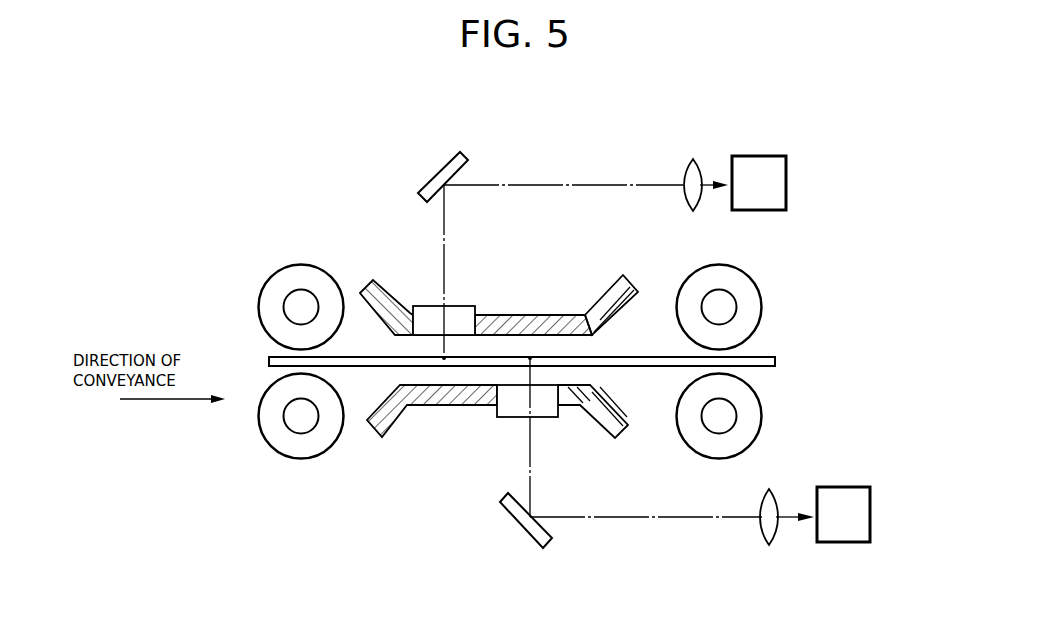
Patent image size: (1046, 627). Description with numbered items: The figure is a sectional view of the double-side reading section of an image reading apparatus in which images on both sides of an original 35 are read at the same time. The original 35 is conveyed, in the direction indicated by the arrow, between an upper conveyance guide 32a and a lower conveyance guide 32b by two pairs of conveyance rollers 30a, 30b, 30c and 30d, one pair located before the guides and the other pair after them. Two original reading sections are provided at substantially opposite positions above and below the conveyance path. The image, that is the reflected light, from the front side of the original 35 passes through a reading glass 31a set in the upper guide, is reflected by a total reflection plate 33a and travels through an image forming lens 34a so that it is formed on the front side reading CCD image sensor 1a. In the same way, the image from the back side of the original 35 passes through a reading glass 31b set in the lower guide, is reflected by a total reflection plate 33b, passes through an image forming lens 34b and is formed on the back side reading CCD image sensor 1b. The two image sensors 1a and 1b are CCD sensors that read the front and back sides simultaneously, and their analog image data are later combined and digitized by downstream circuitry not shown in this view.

The front side reading CCD image sensor 1a is at (787, 183).
The back side reading CCD image sensor 1b is at (863, 487).
The conveyance roller 30a is at (323, 265).
The conveyance roller 30b is at (313, 458).
The conveyance roller 30c is at (760, 290).
The conveyance roller 30d is at (762, 410).
The reading glass 31a is at (465, 305).
The reading glass 31b is at (546, 418).
The conveyance guide 32a is at (555, 315).
The conveyance guide 32b is at (448, 406).
The total reflection plate 33a is at (467, 157).
The total reflection plate 33b is at (548, 544).
The image forming lens 34a is at (694, 157).
The image forming lens 34b is at (776, 538).
The original 35 is at (638, 367).